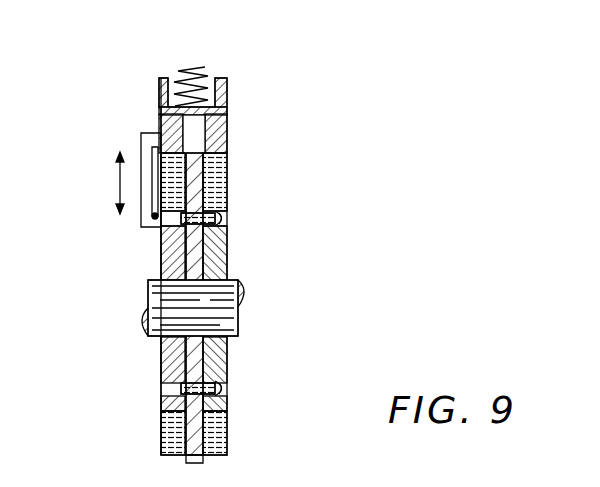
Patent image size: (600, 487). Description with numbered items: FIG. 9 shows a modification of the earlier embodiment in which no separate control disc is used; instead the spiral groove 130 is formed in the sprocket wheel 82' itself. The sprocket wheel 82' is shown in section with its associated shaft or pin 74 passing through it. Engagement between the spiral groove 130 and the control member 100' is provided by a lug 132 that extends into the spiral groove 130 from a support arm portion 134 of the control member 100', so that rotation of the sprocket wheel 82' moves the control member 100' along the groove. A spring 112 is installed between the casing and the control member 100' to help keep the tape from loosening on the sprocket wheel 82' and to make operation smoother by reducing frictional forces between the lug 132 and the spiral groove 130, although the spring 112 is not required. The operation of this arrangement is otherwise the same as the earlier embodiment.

The spring 112 is at (186, 73).
The control member 100' is at (119, 253).
The support arm portion 134 is at (140, 153).
The lug 132 is at (153, 217).
The spiral groove 130 is at (181, 228).
The sprocket wheel 82' is at (247, 266).
The roller pin 74 is at (160, 337).